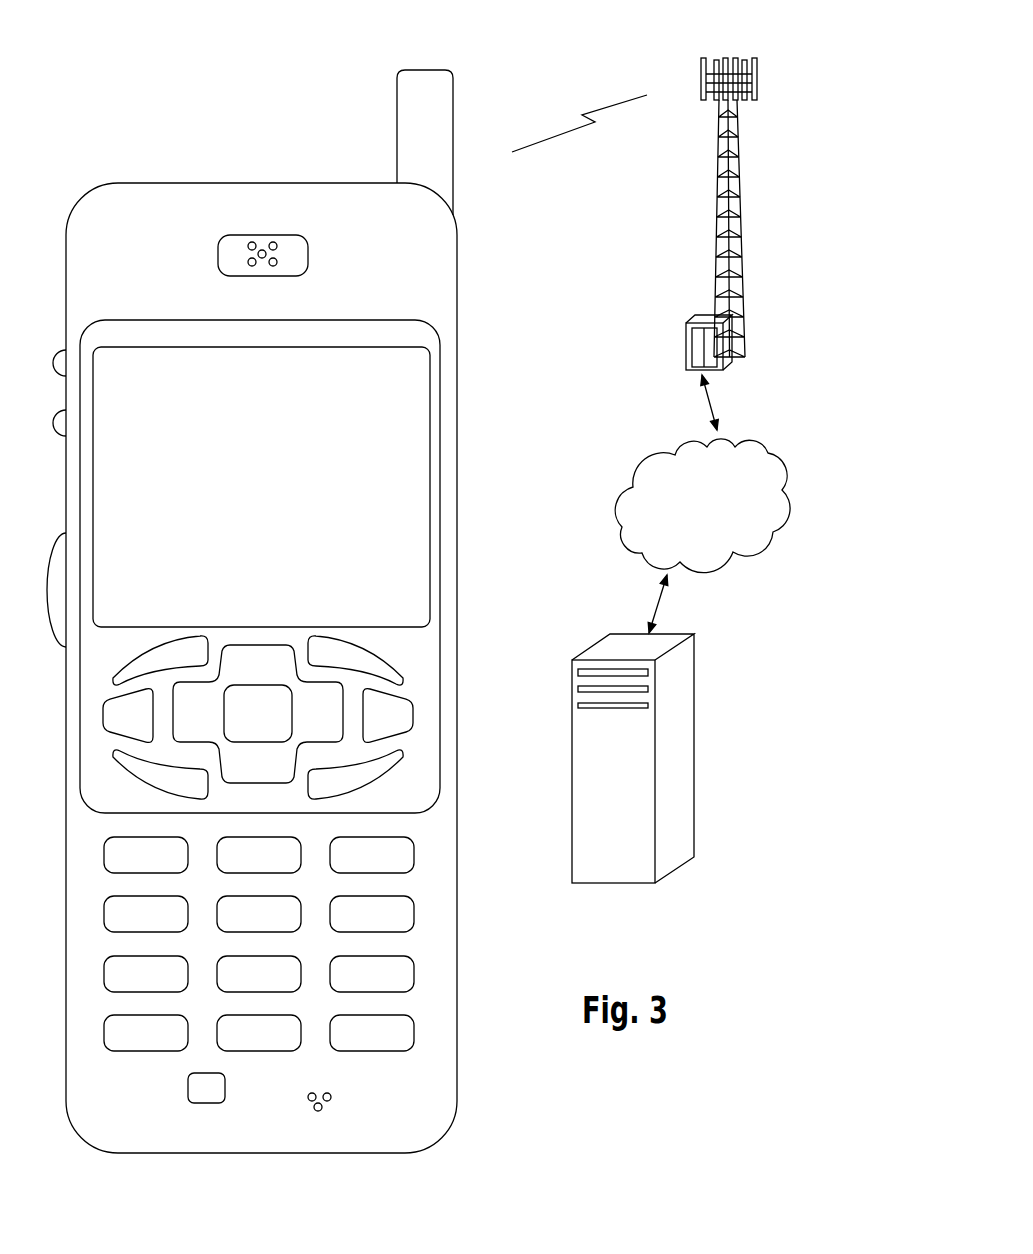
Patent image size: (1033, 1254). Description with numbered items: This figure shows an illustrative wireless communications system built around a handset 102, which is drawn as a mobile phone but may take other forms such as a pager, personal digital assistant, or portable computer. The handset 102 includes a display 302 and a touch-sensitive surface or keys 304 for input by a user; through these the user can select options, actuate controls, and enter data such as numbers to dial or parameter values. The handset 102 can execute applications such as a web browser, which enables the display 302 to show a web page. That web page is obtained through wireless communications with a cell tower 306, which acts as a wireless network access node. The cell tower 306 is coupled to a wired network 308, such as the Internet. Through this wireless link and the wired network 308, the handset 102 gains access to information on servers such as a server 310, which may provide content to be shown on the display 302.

The handset 102 is at (114, 1152).
The display 302 is at (430, 360).
The keys 304 is at (468, 635).
The cell tower 306 is at (715, 228).
The wired network 308 is at (630, 553).
The server 310 is at (612, 883).